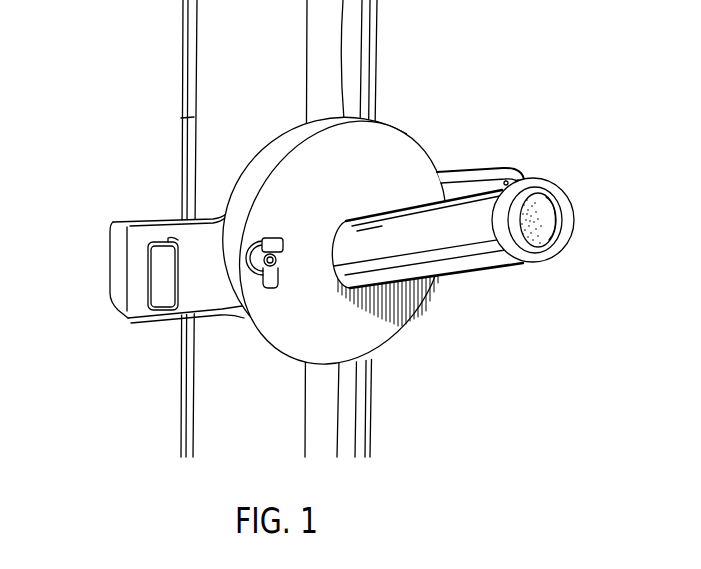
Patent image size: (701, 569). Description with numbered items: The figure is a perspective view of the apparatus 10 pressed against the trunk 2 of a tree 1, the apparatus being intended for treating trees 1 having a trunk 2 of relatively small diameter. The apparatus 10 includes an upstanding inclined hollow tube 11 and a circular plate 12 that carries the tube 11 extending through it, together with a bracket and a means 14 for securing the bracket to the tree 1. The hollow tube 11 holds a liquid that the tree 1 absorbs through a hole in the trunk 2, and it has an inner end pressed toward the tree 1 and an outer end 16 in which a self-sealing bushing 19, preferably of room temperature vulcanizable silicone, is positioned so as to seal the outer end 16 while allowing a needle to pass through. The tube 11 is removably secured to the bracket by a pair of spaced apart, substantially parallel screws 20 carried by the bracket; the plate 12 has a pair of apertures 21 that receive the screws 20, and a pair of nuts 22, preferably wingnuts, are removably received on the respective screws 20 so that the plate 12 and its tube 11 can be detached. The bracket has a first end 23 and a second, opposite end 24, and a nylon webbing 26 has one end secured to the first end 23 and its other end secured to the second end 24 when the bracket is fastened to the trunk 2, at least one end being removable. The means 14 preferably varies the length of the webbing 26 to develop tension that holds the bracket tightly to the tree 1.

The tree 1 is at (398, 27).
The trunk 2 is at (205, 68).
The apparatus 10 is at (337, 264).
The hollow tube 11 is at (467, 286).
The circular plate 12 is at (390, 152).
The means for securing the bracket body to the tree 14 is at (150, 218).
The outer end 16 is at (474, 228).
The self-sealing bushing 19 is at (560, 242).
The screws 20 is at (282, 262).
The apertures 21 is at (247, 263).
The nuts 22 is at (280, 300).
The first end 23 is at (130, 276).
The second end 24 is at (500, 174).
The nylon webbing 26 is at (162, 292).